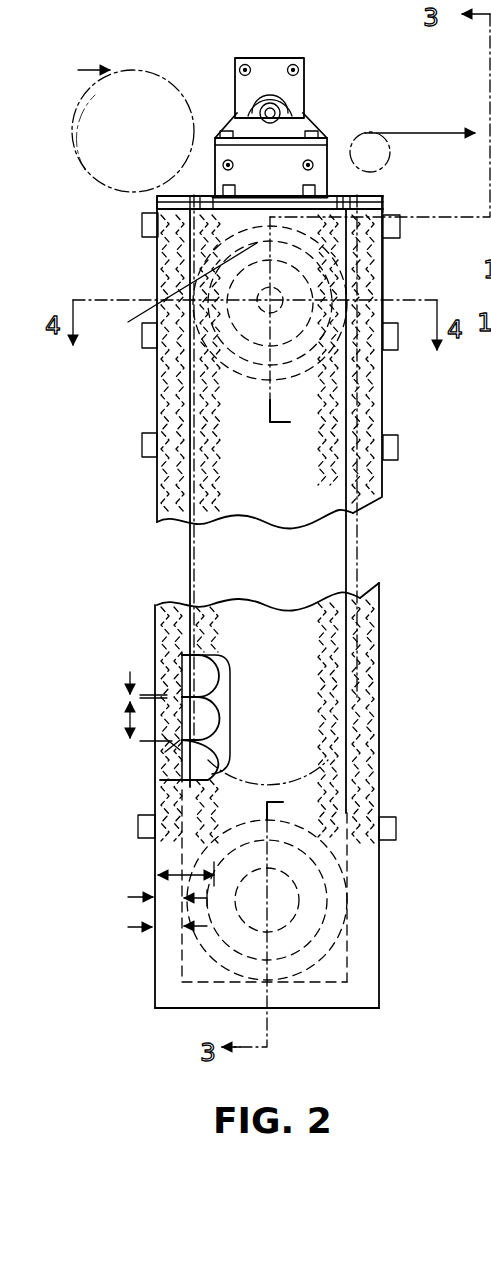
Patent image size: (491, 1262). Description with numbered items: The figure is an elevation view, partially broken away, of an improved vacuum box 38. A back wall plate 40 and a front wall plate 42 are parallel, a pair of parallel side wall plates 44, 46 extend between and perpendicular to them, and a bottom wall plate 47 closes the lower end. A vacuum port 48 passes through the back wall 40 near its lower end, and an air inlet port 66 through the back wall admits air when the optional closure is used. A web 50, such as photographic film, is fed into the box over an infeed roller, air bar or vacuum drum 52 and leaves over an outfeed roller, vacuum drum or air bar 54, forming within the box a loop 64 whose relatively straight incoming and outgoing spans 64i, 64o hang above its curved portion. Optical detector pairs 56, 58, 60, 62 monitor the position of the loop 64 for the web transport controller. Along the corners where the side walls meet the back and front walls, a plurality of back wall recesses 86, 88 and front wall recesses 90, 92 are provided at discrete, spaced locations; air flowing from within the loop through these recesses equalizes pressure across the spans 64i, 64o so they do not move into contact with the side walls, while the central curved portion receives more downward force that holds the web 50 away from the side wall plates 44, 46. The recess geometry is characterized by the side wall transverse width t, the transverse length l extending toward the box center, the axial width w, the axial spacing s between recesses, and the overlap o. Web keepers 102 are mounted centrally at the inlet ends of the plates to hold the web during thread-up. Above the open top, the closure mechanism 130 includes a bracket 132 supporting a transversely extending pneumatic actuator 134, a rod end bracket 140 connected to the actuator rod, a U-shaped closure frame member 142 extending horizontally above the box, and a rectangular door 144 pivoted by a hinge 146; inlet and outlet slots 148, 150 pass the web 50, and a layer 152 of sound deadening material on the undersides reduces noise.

The vacuum box 38 is at (314, 1035).
The back wall plate 40 is at (229, 692).
The front wall plate 42 is at (347, 853).
The side wall plate 44 is at (157, 267).
The side wall plate 46 is at (383, 253).
The bottom wall plate 47 is at (230, 1010).
The vacuum port 48 is at (347, 947).
The web 50 is at (118, 76).
The infeed roller 52 is at (100, 163).
The outfeed roller 54 is at (360, 147).
The optical detector pair 56 is at (142, 230).
The optical detector pair 58 is at (143, 345).
The optical detector pair 60 is at (142, 435).
The optical detector pair 62 is at (138, 815).
The loop 64 is at (242, 380).
The incoming span 64i is at (190, 565).
The outgoing span 64o is at (353, 535).
The air inlet port 66 is at (393, 283).
The back wall recess 86 is at (183, 655).
The back wall recess 88 is at (380, 662).
The front wall recess 90 is at (155, 623).
The front wall recess 92 is at (373, 633).
The web keeper 102 is at (168, 291).
The closure mechanism 130 is at (372, 96).
The bracket 132 is at (270, 78).
The pneumatic actuator 134 is at (283, 113).
The rod end bracket 140 is at (243, 128).
The closure frame member 142 is at (383, 200).
The door 144 is at (328, 192).
The hinge 146 is at (250, 177).
The inlet slot 148 is at (187, 182).
The outlet slot 150 is at (365, 197).
The layer of sound deadening material 152 is at (393, 207).
The axial spacing s is at (145, 672).
The axial width w is at (136, 721).
The transverse length l is at (188, 870).
The overlap o is at (159, 895).
The transverse width t is at (160, 925).